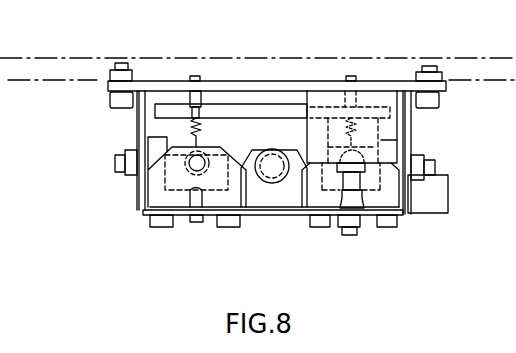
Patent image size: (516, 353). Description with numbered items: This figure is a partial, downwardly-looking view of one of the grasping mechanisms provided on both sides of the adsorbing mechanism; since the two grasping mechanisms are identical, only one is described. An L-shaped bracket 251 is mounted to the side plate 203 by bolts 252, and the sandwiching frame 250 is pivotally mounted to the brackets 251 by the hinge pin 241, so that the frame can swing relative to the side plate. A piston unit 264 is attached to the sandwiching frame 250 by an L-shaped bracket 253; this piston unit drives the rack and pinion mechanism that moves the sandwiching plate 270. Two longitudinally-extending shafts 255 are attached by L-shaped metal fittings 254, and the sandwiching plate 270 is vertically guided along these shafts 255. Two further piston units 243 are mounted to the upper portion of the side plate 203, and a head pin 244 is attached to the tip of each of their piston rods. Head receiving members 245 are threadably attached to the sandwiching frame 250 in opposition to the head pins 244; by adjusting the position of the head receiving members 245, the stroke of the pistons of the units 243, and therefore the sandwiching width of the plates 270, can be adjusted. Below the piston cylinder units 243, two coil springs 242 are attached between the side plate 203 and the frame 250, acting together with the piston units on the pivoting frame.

The side plate 203 is at (292, 80).
The hinge pin 241 is at (115, 163).
The coil spring 242 is at (202, 129).
The piston unit 243 is at (379, 98).
The head pin 244 is at (357, 183).
The head receiving member 245 is at (358, 233).
The sandwiching frame 250 is at (400, 219).
The L-shaped bracket 251 is at (137, 128).
The bolt 252 is at (113, 103).
The L-shaped bracket 253 is at (270, 198).
The L-shaped metal fitting 254 is at (166, 197).
The shaft 255 is at (190, 166).
The piston unit 264 is at (268, 176).
The sandwiching plate 270 is at (232, 103).